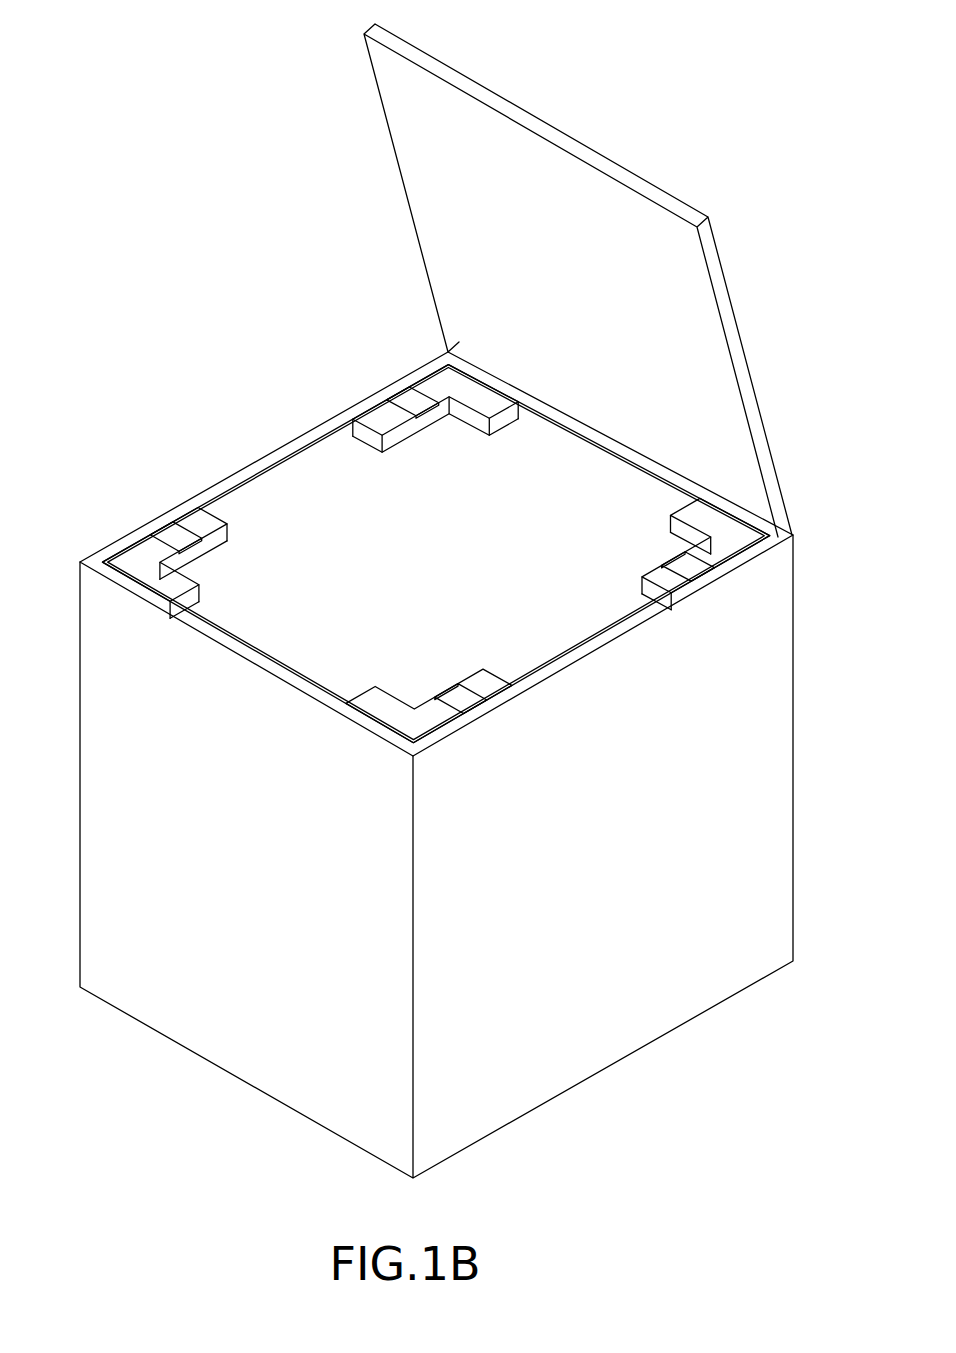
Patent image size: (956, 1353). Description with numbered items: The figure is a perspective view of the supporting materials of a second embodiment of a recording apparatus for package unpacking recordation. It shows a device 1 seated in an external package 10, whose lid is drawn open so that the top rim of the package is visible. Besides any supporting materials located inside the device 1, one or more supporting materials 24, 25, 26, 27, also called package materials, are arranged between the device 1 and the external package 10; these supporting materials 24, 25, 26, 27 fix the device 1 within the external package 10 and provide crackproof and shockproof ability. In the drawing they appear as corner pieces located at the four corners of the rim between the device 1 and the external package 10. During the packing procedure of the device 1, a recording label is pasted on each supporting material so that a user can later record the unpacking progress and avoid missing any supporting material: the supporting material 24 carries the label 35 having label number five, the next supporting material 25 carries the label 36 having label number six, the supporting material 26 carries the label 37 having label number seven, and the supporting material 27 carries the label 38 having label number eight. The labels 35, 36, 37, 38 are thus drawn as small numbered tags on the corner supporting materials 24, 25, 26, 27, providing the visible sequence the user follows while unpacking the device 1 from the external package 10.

The device 1 is at (262, 478).
The external package 10 is at (420, 157).
The supporting material 24 is at (440, 386).
The supporting material 25 is at (727, 538).
The supporting material 26 is at (418, 723).
The supporting material 27 is at (140, 560).
The label 35 is at (410, 393).
The label 36 is at (672, 580).
The label 37 is at (473, 692).
The label 38 is at (185, 533).